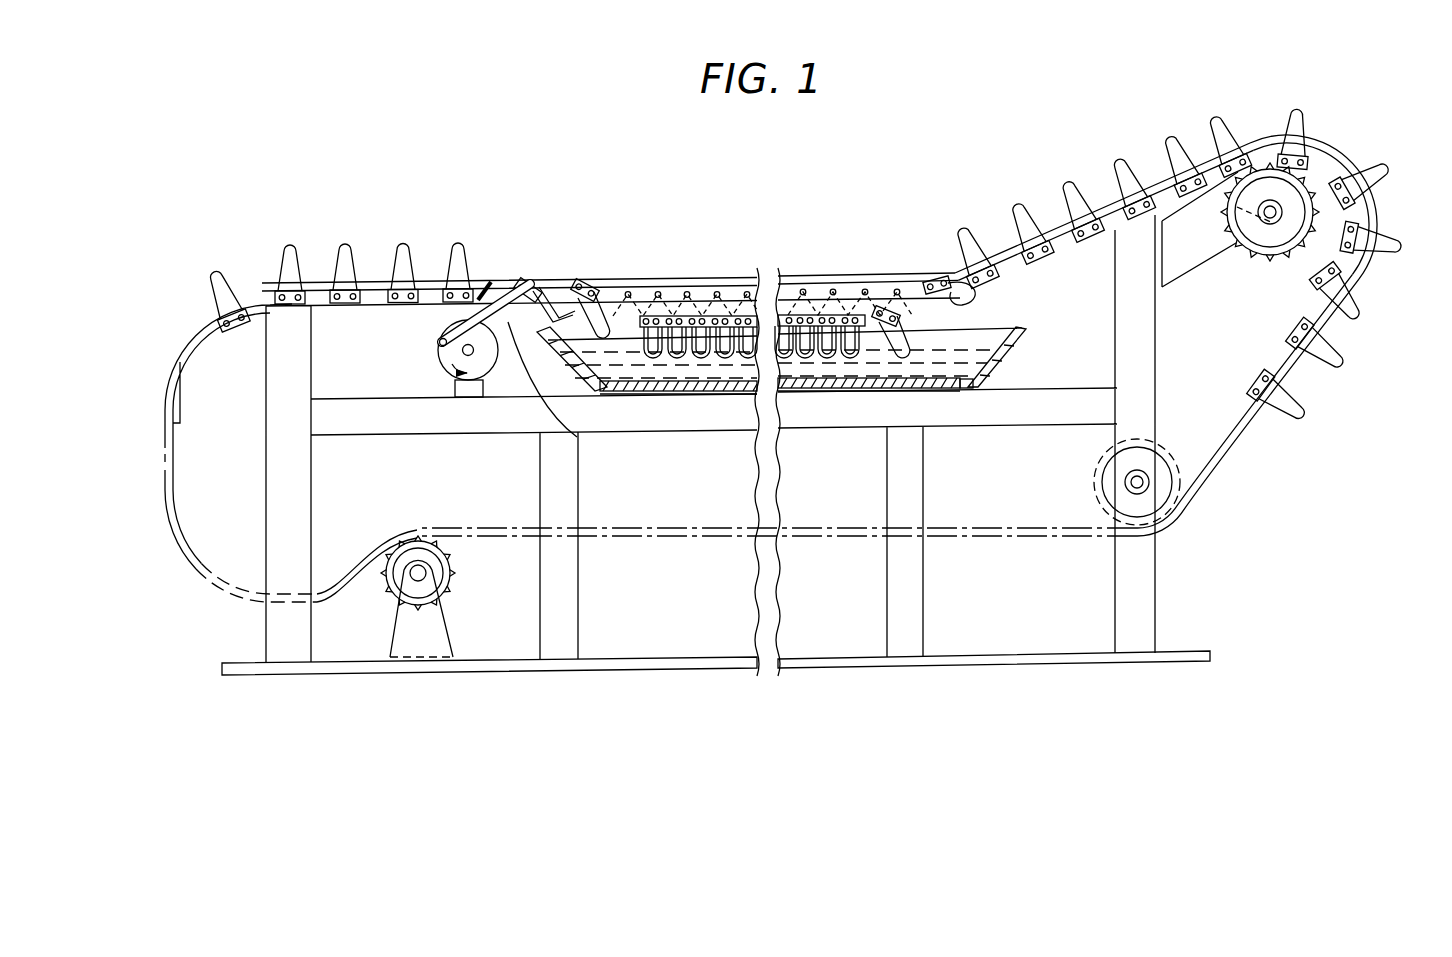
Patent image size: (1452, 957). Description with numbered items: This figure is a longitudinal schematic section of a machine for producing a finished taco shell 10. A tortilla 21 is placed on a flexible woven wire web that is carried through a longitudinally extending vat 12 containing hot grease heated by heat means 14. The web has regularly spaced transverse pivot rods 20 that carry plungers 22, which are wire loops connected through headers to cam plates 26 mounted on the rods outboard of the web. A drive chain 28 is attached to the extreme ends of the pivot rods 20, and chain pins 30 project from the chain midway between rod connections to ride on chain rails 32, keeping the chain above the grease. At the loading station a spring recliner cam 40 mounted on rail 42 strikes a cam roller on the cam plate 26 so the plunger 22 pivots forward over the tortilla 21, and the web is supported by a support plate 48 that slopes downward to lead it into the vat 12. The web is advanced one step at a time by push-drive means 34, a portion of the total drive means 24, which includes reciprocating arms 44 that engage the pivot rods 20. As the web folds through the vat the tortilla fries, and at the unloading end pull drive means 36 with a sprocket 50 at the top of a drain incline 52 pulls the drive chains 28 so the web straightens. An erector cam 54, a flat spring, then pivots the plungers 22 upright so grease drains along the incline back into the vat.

The taco shell 10 is at (1337, 363).
The vat 12 is at (584, 380).
The heat means 14 is at (745, 396).
The pivot rods 20 is at (300, 285).
The tortilla 21 is at (750, 386).
The plungers 22 is at (222, 292).
The drive means 24 is at (1243, 265).
The cam plates 26 is at (583, 284).
The drive chain 28 is at (650, 285).
The chain pins 30 is at (718, 292).
The chain rails 32 is at (845, 285).
The push-drive means 34 is at (501, 373).
The pull drive means 36 is at (1338, 143).
The spring recliner cam 40 is at (487, 293).
The rail 42 is at (1057, 225).
The arms 44 is at (440, 337).
The support plate 48 is at (578, 437).
The sprocket 50 is at (1277, 237).
The drain incline 52 is at (1017, 262).
The erector cam 54 is at (952, 280).